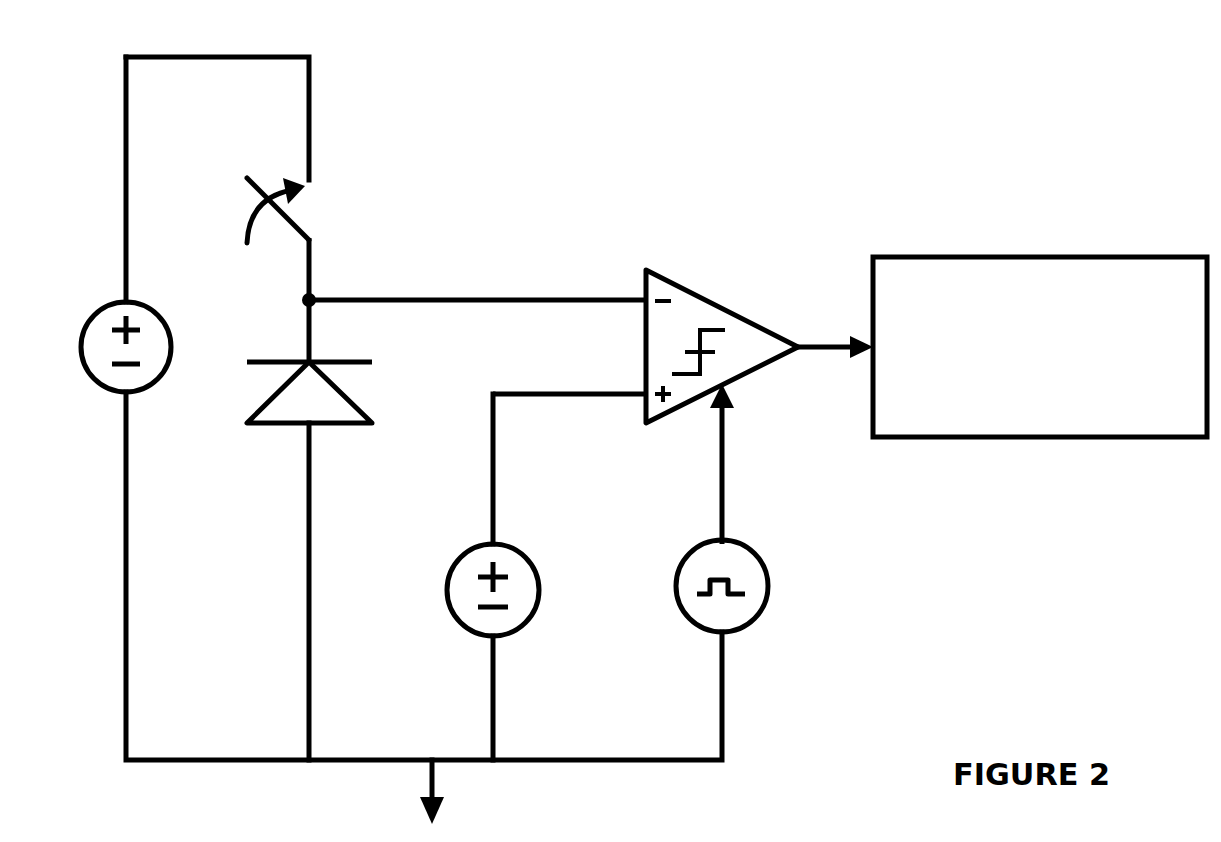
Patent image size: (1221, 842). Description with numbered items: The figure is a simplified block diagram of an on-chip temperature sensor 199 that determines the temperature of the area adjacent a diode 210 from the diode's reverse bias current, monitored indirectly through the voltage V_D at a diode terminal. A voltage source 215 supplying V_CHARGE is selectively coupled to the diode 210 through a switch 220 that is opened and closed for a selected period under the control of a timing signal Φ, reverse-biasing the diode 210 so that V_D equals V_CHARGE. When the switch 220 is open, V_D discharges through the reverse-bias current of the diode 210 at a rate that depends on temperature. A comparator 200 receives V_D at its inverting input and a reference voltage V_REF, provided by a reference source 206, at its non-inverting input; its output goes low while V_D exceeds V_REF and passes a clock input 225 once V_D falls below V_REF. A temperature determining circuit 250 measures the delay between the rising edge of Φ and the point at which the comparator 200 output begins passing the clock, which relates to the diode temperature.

The on-chip temperature sensor 199 is at (740, 145).
The switch 220 is at (316, 230).
The voltage source 215 is at (134, 390).
The diode 210 is at (338, 423).
The comparator 200 is at (736, 382).
The temperature determining circuit 250 is at (1040, 257).
The reference voltage source 206 is at (523, 622).
The clock input 225 is at (750, 618).